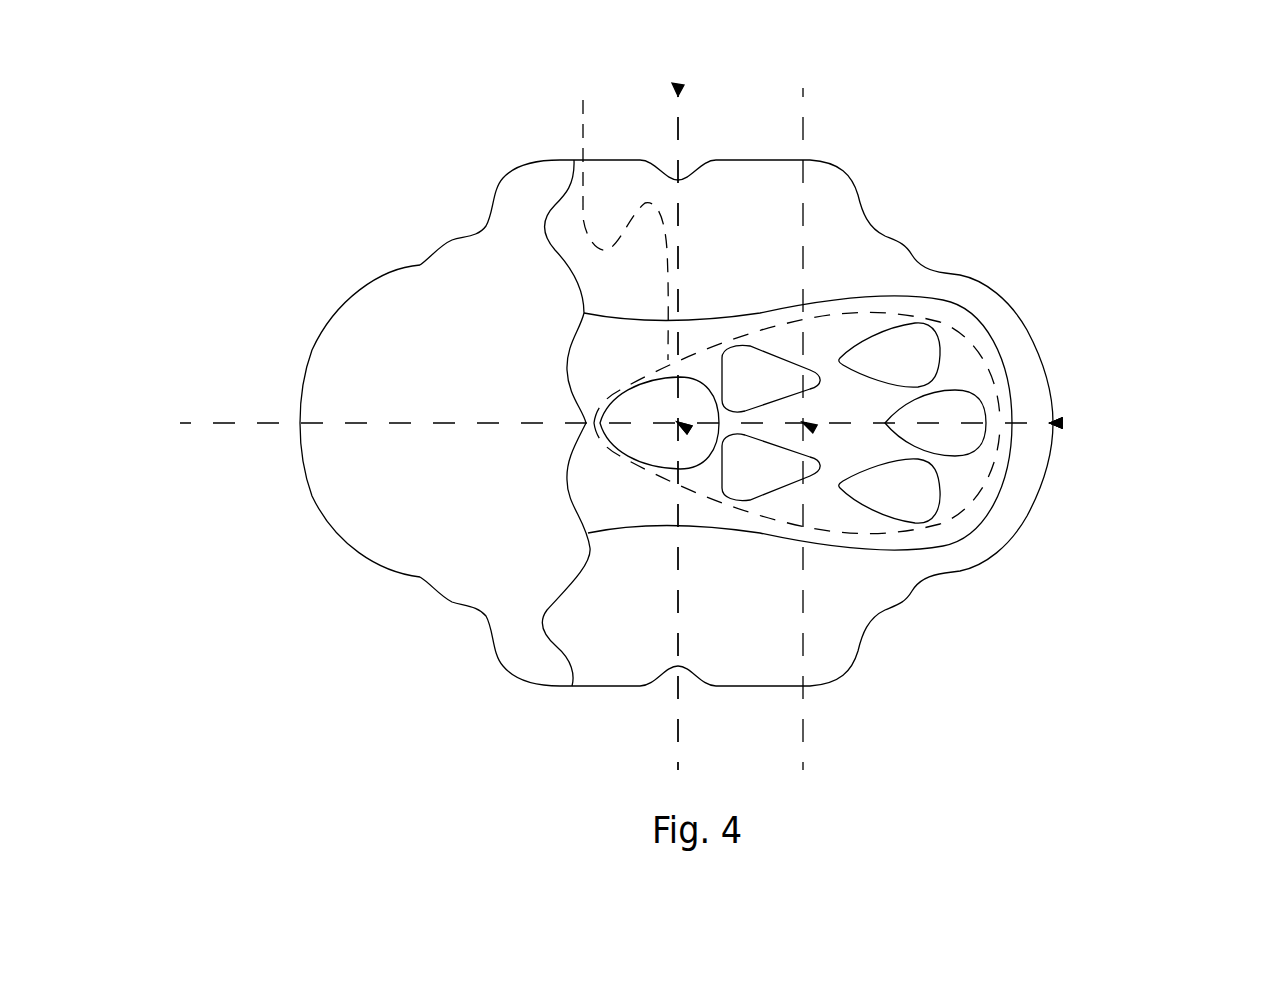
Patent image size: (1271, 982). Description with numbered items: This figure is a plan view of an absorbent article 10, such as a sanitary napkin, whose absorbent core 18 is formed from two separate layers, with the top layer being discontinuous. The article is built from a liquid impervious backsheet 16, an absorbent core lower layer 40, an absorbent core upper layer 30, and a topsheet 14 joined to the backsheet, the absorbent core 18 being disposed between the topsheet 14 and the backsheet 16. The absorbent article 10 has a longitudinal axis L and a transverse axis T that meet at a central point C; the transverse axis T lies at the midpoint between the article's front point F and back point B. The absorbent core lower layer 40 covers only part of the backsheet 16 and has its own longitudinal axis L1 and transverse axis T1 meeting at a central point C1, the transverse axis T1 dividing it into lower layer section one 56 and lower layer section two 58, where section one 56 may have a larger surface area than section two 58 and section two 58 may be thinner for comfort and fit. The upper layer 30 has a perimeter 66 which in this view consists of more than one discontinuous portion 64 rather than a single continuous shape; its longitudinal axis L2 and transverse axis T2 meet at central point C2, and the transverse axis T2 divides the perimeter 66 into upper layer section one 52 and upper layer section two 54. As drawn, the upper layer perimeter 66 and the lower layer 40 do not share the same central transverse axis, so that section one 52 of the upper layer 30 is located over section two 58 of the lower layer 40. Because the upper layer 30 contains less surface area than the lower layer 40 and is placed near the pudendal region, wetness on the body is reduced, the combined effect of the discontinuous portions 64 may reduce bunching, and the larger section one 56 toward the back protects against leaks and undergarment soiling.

The absorbent article 10 is at (368, 215).
The topsheet 14 is at (348, 527).
The liquid impervious backsheet 16 is at (1008, 337).
The absorbent core 18 is at (630, 461).
The absorbent core upper layer 30 is at (654, 442).
The absorbent core lower layer 40 is at (612, 495).
The upper layer section one 52 is at (960, 478).
The upper layer section two 54 is at (633, 390).
The lower layer section one 56 is at (598, 497).
The lower layer section two 58 is at (890, 543).
The discontinuous portion 64 is at (813, 380).
The perimeter 66 is at (620, 218).
The back point B is at (297, 423).
The central point C is at (678, 423).
The central point of the lower layer C1 is at (680, 425).
The central point of the upper layer perimeter C2 is at (803, 423).
The front point F is at (1055, 424).
The longitudinal axis L is at (1055, 422).
The longitudinal axis of the lower layer L1 is at (1057, 420).
The longitudinal axis of the upper layer perimeter L2 is at (1057, 422).
The transverse axis T is at (680, 93).
The transverse axis of the lower layer T1 is at (680, 90).
The transverse axis of the upper layer perimeter T2 is at (805, 737).